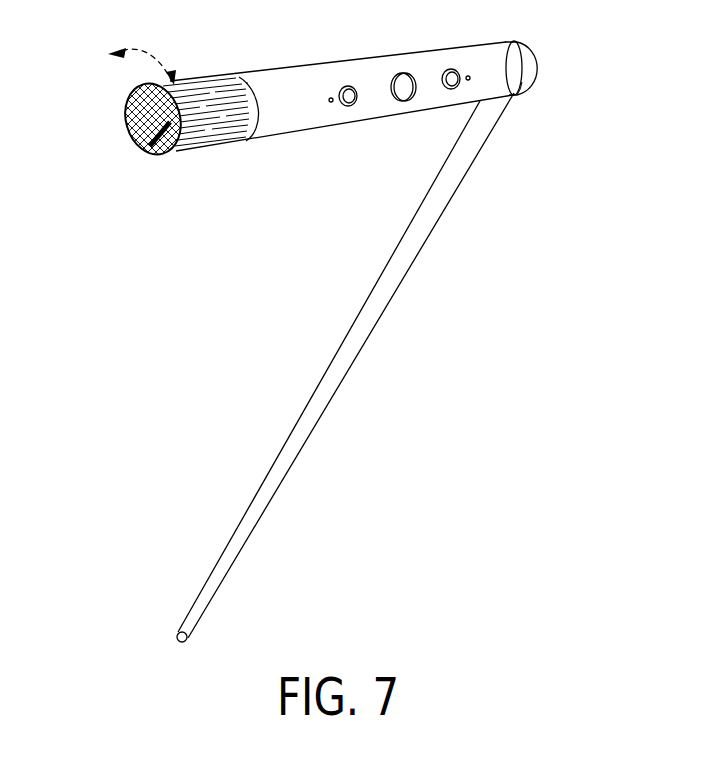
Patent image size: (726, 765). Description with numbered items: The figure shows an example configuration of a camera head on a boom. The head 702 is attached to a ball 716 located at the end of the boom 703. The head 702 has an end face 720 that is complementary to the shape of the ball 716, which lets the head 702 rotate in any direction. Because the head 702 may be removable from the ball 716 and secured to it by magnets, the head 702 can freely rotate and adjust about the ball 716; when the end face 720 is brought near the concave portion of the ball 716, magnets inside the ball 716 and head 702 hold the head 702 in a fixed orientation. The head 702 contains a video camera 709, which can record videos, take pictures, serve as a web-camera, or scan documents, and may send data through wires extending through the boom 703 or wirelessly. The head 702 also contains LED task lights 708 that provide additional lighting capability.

The head 702 is at (298, 136).
The boom 703 is at (349, 372).
The LED task lights 708 is at (437, 70).
The video camera 709 is at (153, 145).
The ball 716 is at (538, 53).
The end face 720 is at (522, 82).